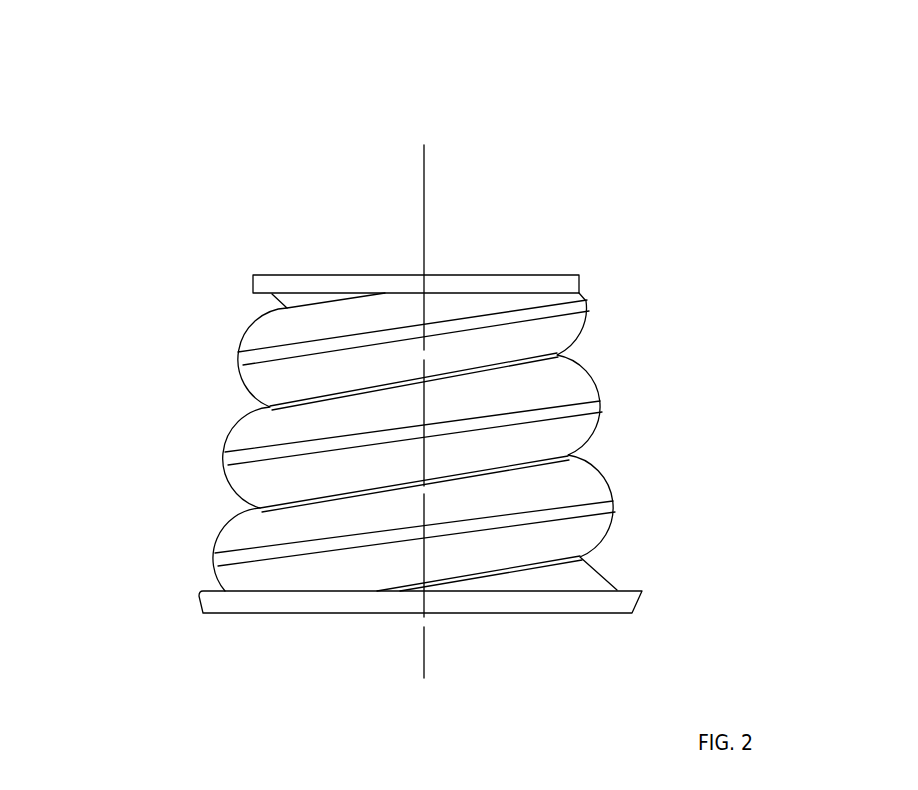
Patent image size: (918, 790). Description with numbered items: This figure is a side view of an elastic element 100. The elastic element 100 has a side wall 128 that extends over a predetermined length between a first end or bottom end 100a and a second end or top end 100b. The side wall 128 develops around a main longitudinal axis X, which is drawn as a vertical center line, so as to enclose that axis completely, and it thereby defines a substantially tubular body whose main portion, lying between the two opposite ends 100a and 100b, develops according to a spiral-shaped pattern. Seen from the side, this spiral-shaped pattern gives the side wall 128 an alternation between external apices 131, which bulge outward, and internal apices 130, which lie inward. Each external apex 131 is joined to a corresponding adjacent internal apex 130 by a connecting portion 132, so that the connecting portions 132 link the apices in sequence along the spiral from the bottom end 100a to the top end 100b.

The elastic element 100 is at (422, 342).
The bottom end 100a is at (174, 625).
The top end 100b is at (236, 259).
The side wall 128 is at (236, 334).
The internal apex 130 is at (254, 306).
The external apex 131 is at (221, 354).
The connecting portion 132 is at (604, 378).
The main longitudinal axis X is at (424, 157).